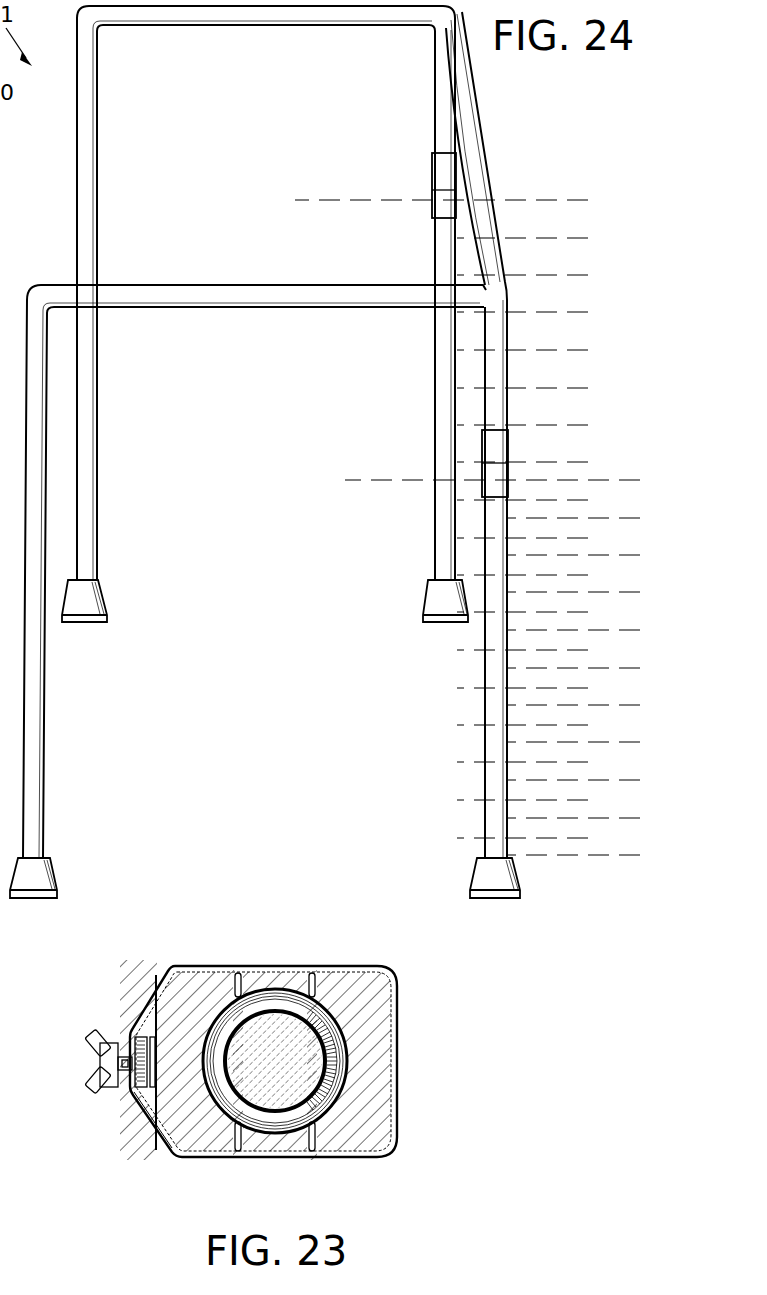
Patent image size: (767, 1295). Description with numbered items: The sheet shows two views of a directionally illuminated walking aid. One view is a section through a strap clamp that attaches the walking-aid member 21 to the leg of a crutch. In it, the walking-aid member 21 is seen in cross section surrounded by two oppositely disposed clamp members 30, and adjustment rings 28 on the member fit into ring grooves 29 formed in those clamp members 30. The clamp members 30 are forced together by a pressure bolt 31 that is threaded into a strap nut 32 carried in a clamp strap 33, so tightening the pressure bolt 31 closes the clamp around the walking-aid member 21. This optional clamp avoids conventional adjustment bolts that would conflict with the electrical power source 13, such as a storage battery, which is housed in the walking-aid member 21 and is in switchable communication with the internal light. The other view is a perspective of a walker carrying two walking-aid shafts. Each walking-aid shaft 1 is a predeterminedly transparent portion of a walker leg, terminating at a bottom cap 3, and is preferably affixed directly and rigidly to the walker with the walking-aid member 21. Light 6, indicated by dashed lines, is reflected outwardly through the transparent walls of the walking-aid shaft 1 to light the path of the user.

In FIG. 24, the walking-aid shaft 1 is at (440, 505).
In FIG. 24, the walking-aid member 21 is at (495, 382).
In FIG. 23, the walking-aid member 21 is at (276, 1061).
In FIG. 24, the light 6 is at (540, 200).
In FIG. 24, the bottom cap 3 is at (100, 590).
In FIG. 23, the clamp members 30 is at (340, 983).
In FIG. 23, the electrical power source 13 is at (244, 1110).
In FIG. 23, the adjustment rings 28 is at (333, 1018).
In FIG. 23, the ring grooves 29 is at (333, 1075).
In FIG. 23, the pressure bolt 31 is at (112, 1050).
In FIG. 23, the strap nut 32 is at (118, 1068).
In FIG. 23, the clamp strap 33 is at (141, 1116).